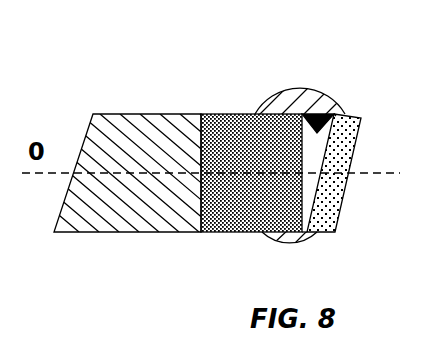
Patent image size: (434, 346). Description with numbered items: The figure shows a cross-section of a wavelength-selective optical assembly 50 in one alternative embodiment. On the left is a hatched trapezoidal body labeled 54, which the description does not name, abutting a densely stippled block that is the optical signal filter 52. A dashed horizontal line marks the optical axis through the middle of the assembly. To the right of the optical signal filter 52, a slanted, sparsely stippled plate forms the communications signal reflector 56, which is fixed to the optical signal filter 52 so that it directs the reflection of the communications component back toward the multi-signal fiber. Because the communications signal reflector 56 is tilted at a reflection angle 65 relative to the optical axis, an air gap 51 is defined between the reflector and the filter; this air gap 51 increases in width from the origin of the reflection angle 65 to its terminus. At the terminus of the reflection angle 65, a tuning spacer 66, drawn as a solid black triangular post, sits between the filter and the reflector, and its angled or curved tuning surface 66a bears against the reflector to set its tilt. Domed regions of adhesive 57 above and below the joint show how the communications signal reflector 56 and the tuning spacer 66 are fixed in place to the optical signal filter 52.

The wavelength-selective optical assembly 50 is at (173, 50).
The air gap 51 is at (316, 147).
The optical signal filter 52 is at (218, 236).
The first component 54 is at (104, 123).
The communications signal reflector 56 is at (352, 128).
The adhesive 57 is at (285, 100).
The reflection angle 65 is at (307, 194).
The tuning spacer 66 is at (318, 114).
The tuning surface 66a is at (338, 113).